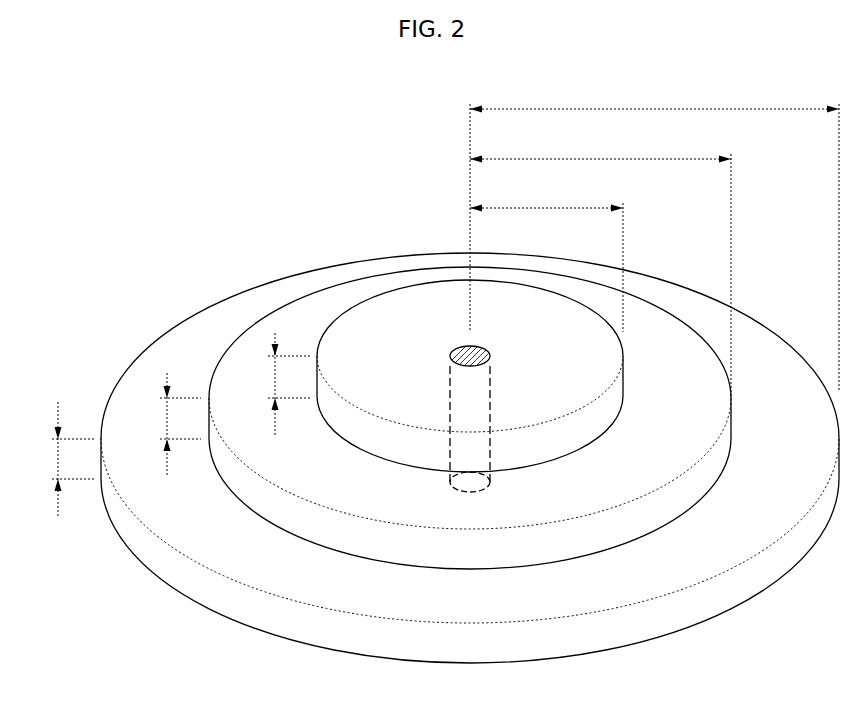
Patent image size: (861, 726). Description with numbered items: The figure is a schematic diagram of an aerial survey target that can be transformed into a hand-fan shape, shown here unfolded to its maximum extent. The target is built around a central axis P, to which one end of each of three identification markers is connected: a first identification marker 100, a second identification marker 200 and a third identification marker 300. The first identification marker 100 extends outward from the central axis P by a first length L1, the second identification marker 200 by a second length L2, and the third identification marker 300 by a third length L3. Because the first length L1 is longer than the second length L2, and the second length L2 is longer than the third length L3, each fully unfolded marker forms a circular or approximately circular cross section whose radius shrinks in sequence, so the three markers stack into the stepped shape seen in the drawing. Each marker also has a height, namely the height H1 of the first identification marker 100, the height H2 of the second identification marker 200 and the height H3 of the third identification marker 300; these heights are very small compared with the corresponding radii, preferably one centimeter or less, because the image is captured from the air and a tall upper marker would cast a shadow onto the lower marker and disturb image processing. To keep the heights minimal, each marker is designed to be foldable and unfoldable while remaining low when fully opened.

The first identification marker 100 is at (220, 325).
The second identification marker 200 is at (322, 307).
The third identification marker 300 is at (427, 307).
The central axis P is at (490, 407).
The first length L1 is at (654, 94).
The second length L2 is at (600, 144).
The third length L3 is at (546, 193).
The height of first identification marker H1 is at (56, 460).
The height of second identification marker H2 is at (163, 424).
The height of third identification marker H3 is at (272, 385).